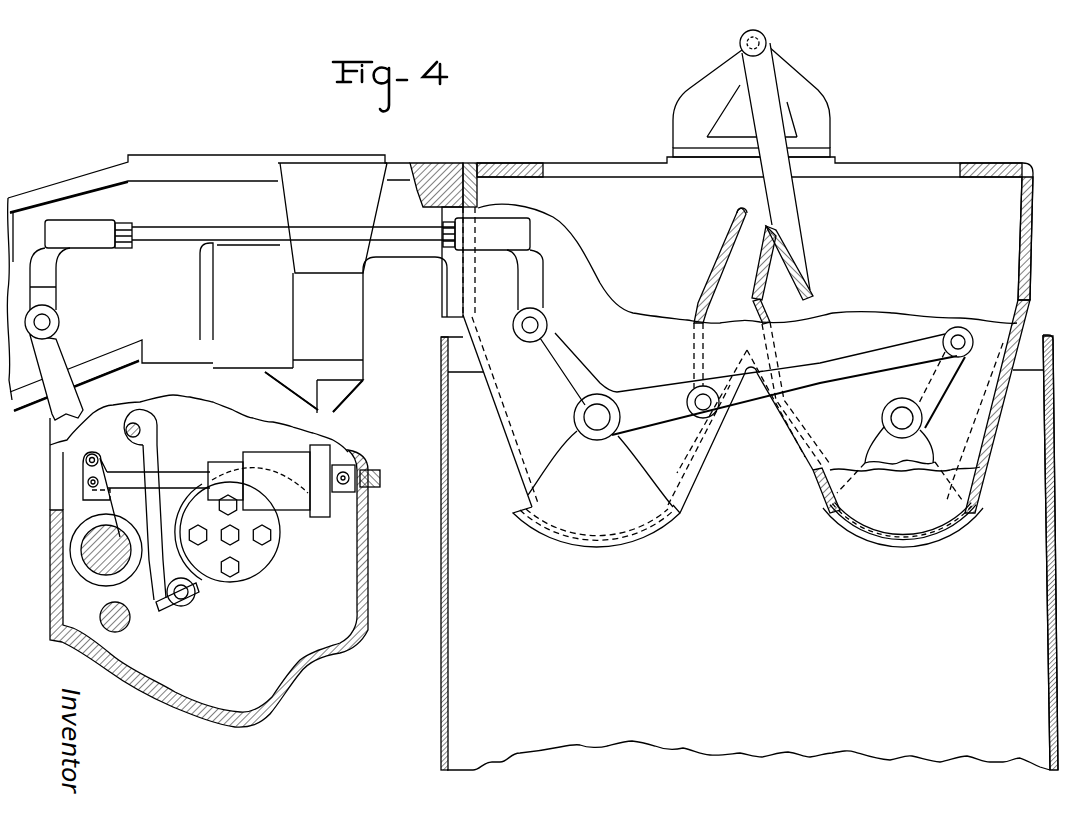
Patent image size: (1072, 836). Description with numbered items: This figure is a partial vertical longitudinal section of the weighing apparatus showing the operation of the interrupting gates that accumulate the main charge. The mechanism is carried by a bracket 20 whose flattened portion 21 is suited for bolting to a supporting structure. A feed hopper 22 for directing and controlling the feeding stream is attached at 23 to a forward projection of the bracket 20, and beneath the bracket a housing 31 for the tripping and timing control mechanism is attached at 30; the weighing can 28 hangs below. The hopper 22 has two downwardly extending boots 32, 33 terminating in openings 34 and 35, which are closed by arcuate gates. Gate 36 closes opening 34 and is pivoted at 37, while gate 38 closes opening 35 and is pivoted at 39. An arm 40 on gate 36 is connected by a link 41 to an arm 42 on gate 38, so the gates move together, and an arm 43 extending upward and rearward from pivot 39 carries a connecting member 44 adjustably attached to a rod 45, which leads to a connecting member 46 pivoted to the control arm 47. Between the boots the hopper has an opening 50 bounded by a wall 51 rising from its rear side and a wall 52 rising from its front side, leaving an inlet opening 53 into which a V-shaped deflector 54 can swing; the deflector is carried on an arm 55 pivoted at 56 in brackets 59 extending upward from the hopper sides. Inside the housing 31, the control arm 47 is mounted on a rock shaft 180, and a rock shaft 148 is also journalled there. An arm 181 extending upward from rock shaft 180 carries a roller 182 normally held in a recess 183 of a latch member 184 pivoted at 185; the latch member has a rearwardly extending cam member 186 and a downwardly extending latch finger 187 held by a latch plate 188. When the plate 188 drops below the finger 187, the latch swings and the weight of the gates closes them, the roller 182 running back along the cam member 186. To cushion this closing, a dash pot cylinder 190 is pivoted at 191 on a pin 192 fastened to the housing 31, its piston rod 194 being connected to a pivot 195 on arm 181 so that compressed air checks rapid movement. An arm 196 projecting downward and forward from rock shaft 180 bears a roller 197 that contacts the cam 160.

The bracket 20 is at (386, 248).
The flattened portion 21 is at (200, 165).
The hopper 22 is at (1035, 177).
The attachment point 23 is at (452, 284).
The weighing can 28 is at (443, 600).
The housing attachment point 30 is at (366, 358).
The housing 31 is at (328, 427).
The boot 32 is at (997, 433).
The boot 33 is at (520, 475).
The opening 34 is at (842, 520).
The opening 35 is at (627, 532).
The gate 36 is at (900, 540).
The pivot 37 is at (905, 425).
The gate 38 is at (607, 540).
The pivot 39 is at (596, 425).
The arm 40 is at (942, 378).
The link 41 is at (870, 367).
The arm 42 is at (640, 392).
The arm 43 is at (560, 350).
The connecting member 44 is at (537, 277).
The rod 45 is at (203, 234).
The connecting member 46 is at (53, 273).
The control arm 47 is at (60, 342).
The opening 50 is at (773, 403).
The wall 51 is at (708, 270).
The wall 52 is at (765, 313).
The inlet opening 53 is at (748, 237).
The V-shaped deflector 54 is at (788, 255).
The arm 55 is at (790, 205).
The pivot 56 is at (765, 42).
The brackets 59 is at (825, 110).
The rock shaft 148 is at (120, 623).
The cam 160 is at (300, 527).
The rock shaft 180 is at (110, 570).
The arm 181 is at (103, 505).
The roller 182 is at (83, 462).
The recess 183 is at (118, 460).
The latch member 184 is at (157, 438).
The pivot 185 is at (140, 427).
The cam member 186 is at (73, 443).
The latch finger 187 is at (157, 527).
The latch plate 188 is at (173, 610).
The cylinder 190 is at (287, 460).
The pivot 191 is at (347, 473).
The pin 192 is at (370, 490).
The rod 194 is at (180, 477).
The pivot 195 is at (88, 482).
The arm 196 is at (142, 575).
The roller 197 is at (203, 590).